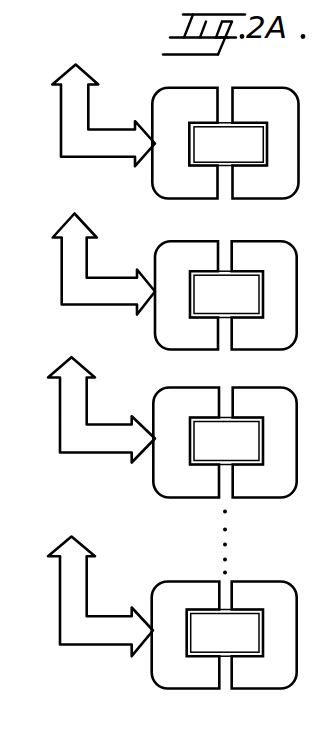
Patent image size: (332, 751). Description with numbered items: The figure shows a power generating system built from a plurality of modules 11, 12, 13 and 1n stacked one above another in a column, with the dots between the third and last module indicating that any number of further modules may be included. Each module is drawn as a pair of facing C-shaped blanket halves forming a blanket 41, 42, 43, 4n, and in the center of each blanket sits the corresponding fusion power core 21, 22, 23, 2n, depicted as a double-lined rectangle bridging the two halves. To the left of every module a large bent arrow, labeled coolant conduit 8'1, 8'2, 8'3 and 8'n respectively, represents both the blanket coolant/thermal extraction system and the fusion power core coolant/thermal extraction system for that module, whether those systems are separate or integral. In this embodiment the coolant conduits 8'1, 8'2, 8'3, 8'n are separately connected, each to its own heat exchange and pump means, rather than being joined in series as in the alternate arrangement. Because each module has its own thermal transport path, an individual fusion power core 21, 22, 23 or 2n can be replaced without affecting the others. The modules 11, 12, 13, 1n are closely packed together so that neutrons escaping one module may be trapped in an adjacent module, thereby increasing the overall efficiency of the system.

The module 11 is at (255, 87).
The module 12 is at (248, 242).
The module 13 is at (268, 387).
The module 1n is at (250, 581).
The core 21 is at (242, 147).
The core 22 is at (208, 293).
The core 23 is at (218, 442).
The core 2n is at (210, 633).
The blanket 41 is at (182, 180).
The blanket 42 is at (161, 327).
The blanket 43 is at (168, 482).
The blanket 4n is at (165, 600).
The coolant conduit 8'1 is at (103, 114).
The coolant conduit 8'2 is at (104, 264).
The coolant conduit 8'3 is at (101, 409).
The coolant conduit 8'n is at (100, 584).